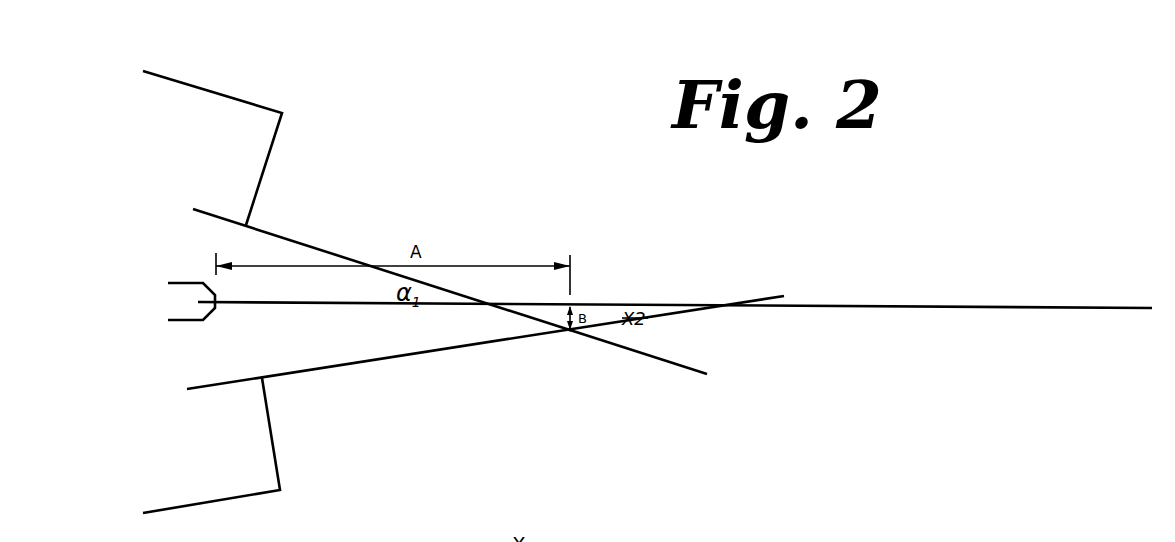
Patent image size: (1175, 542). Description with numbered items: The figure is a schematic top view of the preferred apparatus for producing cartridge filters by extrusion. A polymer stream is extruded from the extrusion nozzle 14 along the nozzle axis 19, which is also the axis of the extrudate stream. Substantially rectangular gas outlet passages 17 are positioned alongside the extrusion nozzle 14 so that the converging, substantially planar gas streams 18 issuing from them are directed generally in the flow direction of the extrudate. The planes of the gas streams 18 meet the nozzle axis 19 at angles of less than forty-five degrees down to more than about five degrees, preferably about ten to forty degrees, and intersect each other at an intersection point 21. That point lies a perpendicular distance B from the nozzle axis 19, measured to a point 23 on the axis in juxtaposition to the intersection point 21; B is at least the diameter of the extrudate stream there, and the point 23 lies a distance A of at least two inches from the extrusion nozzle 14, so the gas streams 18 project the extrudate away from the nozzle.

The extrusion nozzle 14 is at (207, 321).
The gas outlet passages 17 is at (337, 258).
The gas streams 18 is at (268, 165).
The nozzle axis 19 is at (828, 307).
The intersection point 21 is at (570, 330).
The point along the nozzle axis 23 is at (573, 293).